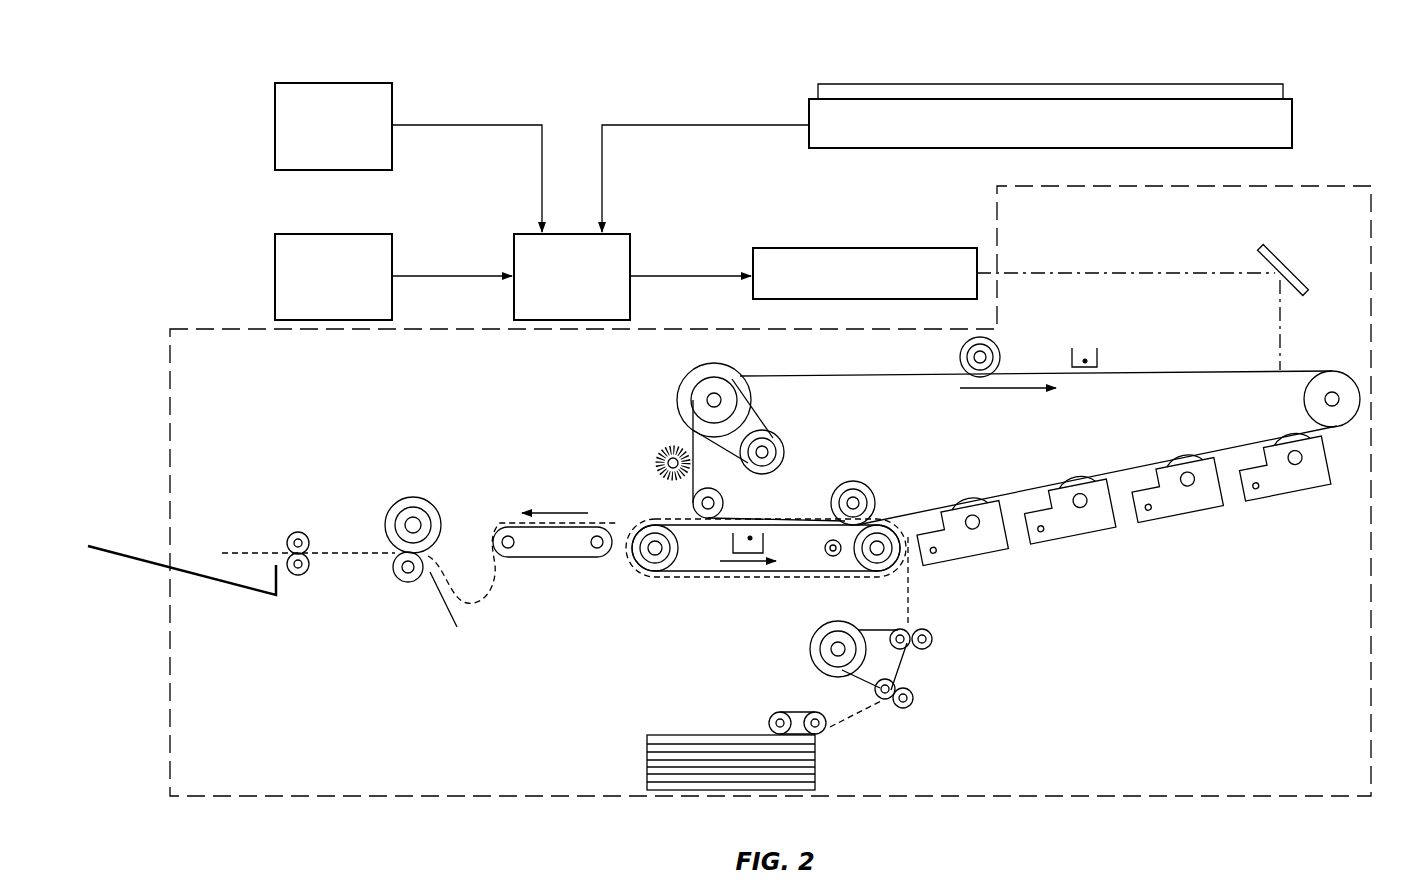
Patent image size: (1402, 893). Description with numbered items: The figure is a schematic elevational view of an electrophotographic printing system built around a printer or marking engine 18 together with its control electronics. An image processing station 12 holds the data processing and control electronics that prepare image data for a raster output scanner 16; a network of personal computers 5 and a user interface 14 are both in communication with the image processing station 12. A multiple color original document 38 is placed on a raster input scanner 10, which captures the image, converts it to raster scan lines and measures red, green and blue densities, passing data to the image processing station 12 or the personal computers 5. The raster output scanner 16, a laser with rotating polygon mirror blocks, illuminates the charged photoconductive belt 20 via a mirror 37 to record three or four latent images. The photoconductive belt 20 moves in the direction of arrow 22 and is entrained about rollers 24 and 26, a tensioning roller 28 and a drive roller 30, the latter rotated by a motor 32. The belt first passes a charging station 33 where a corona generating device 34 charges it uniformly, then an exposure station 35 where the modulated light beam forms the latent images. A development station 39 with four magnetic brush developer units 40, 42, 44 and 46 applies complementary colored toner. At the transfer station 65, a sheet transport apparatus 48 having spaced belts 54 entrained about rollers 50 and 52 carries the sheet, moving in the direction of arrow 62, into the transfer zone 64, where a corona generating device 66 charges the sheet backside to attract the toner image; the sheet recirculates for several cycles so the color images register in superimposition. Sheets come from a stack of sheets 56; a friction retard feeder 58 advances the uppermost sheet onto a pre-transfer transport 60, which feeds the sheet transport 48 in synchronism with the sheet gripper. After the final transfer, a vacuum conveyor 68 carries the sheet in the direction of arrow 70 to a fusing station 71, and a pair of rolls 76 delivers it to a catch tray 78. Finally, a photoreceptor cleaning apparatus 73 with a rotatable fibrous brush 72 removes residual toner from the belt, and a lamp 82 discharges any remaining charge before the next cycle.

The personal computer 5 is at (312, 70).
The raster input scanner 10 is at (1050, 76).
The multiple color original document 38 is at (1155, 85).
The printer or marking engine 18 is at (1337, 182).
The user interface 14 is at (337, 226).
The image processing station 12 is at (527, 223).
The raster output scanner 16 is at (820, 228).
The mirror 37 is at (1296, 275).
The corona generating device 34 is at (1083, 345).
The charging station 33 is at (1112, 328).
The photoconductive belt 20 is at (996, 422).
The exposure station 35 is at (1152, 293).
The lamp 82 is at (995, 343).
The tensioning roller 28 is at (1305, 398).
The arrow 22 is at (995, 392).
The drive roller 30 is at (697, 390).
The photoreceptor cleaning apparatus 73 is at (637, 435).
The fibrous brush 72 is at (657, 463).
The motor 32 is at (786, 440).
The roller 24 is at (713, 490).
The roller 26 is at (876, 494).
The transfer zone 64 is at (751, 560).
The fusing station 71 is at (410, 485).
The arrow 70 is at (570, 504).
The pair of rolls 76 is at (298, 531).
The spaced belts 54 is at (672, 522).
The corona generating device 66 is at (732, 545).
The transfer station 65 is at (776, 539).
The catch tray 78 is at (240, 588).
The vacuum conveyor 68 is at (553, 560).
The roller 50 is at (645, 560).
The sheet transport apparatus 48 is at (751, 561).
The arrow 62 is at (734, 564).
The roller 52 is at (873, 573).
The developer unit 46 is at (980, 556).
The developer unit 44 is at (1074, 538).
The developer unit 42 is at (1183, 517).
The developer unit 40 is at (1292, 496).
The development station 39 is at (1128, 545).
The stack of sheets 56 is at (683, 735).
The friction retard feeder 58 is at (797, 712).
The pre-transfer transport 60 is at (907, 664).